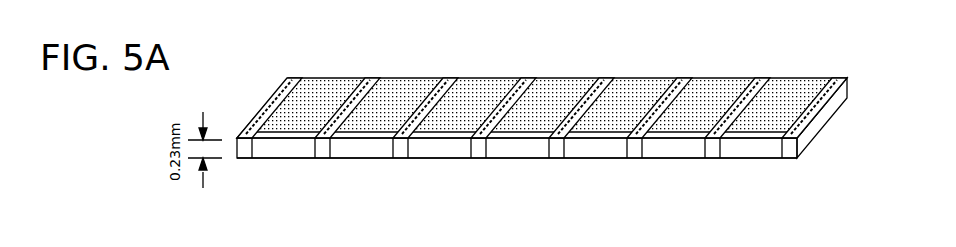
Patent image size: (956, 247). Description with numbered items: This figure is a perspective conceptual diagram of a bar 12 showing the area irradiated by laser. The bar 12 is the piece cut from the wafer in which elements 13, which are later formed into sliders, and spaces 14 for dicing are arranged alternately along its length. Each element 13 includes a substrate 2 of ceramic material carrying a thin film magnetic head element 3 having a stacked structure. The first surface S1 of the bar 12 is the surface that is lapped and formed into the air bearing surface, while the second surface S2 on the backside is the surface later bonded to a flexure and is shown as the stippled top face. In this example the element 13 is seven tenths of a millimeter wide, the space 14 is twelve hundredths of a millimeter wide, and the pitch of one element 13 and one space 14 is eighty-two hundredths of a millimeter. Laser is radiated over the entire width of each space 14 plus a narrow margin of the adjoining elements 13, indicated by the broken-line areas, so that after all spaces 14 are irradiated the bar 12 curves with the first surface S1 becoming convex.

The substrate 2 is at (262, 110).
The thin film magnetic head element 3 is at (243, 137).
The bar 12 is at (605, 47).
The element 13 is at (330, 78).
The space for dicing 14 is at (680, 78).
The first surface S1 is at (667, 168).
The second surface S2 is at (480, 90).